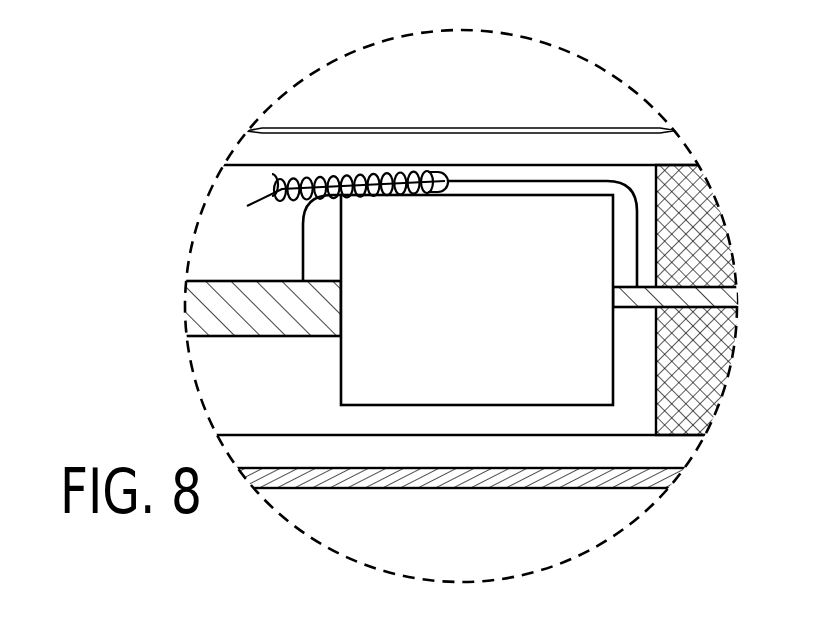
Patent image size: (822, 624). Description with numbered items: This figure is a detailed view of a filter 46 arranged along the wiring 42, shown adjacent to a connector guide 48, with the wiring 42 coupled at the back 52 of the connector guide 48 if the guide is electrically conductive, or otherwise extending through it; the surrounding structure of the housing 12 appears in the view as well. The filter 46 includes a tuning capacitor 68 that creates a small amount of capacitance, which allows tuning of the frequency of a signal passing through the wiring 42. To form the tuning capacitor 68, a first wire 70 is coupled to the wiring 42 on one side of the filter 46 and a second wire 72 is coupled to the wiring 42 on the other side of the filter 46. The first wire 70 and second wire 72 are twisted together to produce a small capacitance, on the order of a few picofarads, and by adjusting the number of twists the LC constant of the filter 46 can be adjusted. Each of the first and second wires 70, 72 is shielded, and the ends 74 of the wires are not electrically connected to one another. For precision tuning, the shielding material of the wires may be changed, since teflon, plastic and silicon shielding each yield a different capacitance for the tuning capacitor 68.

The housing wall 12 is at (427, 130).
The wiring 42 is at (190, 302).
The filter 46 is at (492, 303).
The connector guide 48 is at (733, 352).
The back of the connector guide 52 is at (656, 366).
The tuning capacitor 68 is at (290, 167).
The first wire 70 is at (302, 258).
The second wire 72 is at (515, 181).
The ends of the wires 74 is at (250, 204).